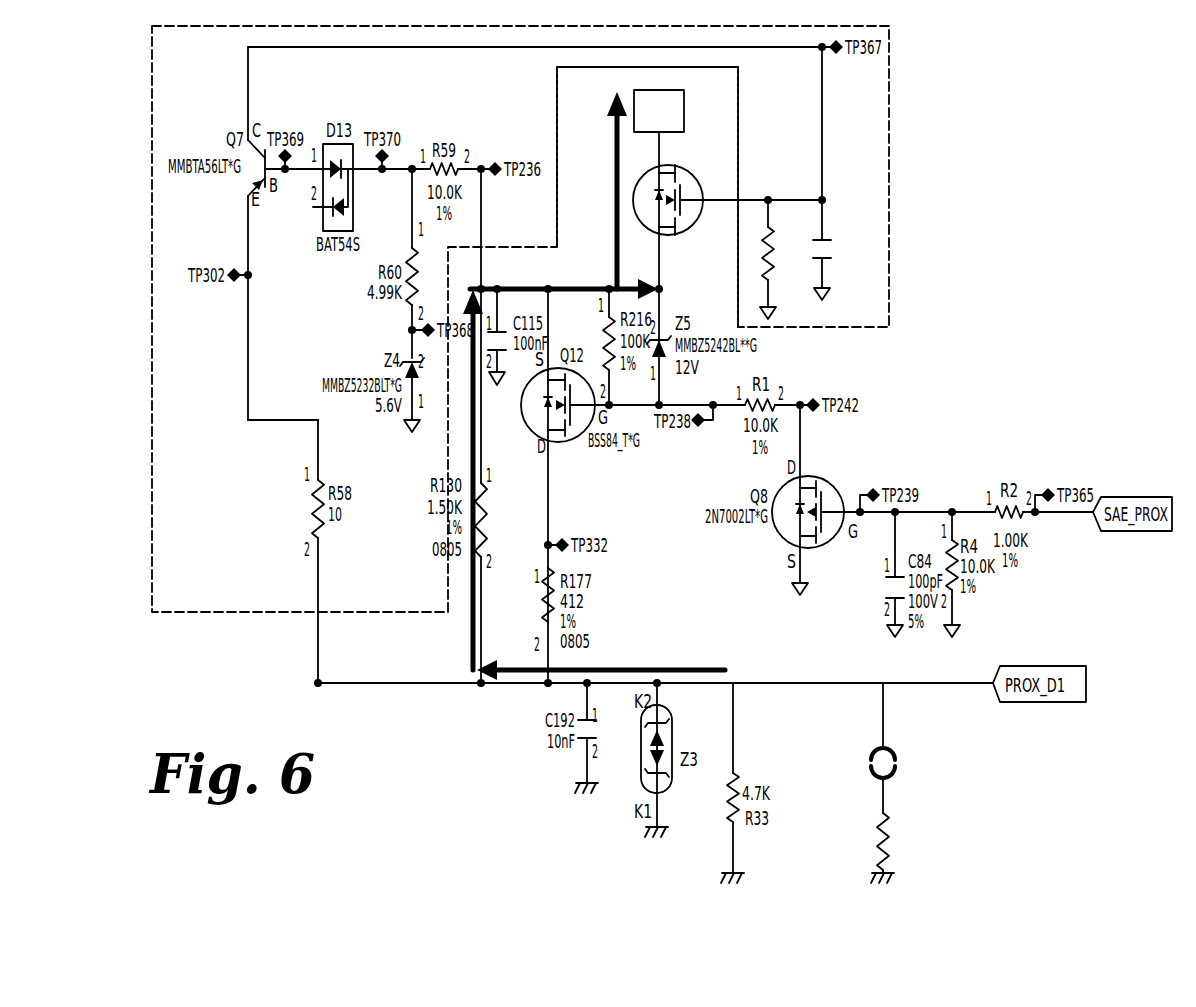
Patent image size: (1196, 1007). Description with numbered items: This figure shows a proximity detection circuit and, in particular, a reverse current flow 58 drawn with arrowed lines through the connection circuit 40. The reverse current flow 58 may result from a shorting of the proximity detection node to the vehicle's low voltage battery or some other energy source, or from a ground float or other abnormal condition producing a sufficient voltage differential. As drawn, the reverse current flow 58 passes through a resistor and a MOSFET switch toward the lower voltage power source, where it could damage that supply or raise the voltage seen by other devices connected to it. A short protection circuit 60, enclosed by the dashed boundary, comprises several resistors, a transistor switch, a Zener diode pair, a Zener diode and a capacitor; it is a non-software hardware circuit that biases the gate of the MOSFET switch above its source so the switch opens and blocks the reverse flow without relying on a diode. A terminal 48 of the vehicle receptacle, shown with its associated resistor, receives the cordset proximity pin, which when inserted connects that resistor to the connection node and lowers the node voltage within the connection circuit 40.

The connection circuit 40 is at (910, 340).
The short protection circuit 60 is at (889, 150).
The reverse current flow 58 is at (522, 287).
The terminal 48 is at (907, 775).